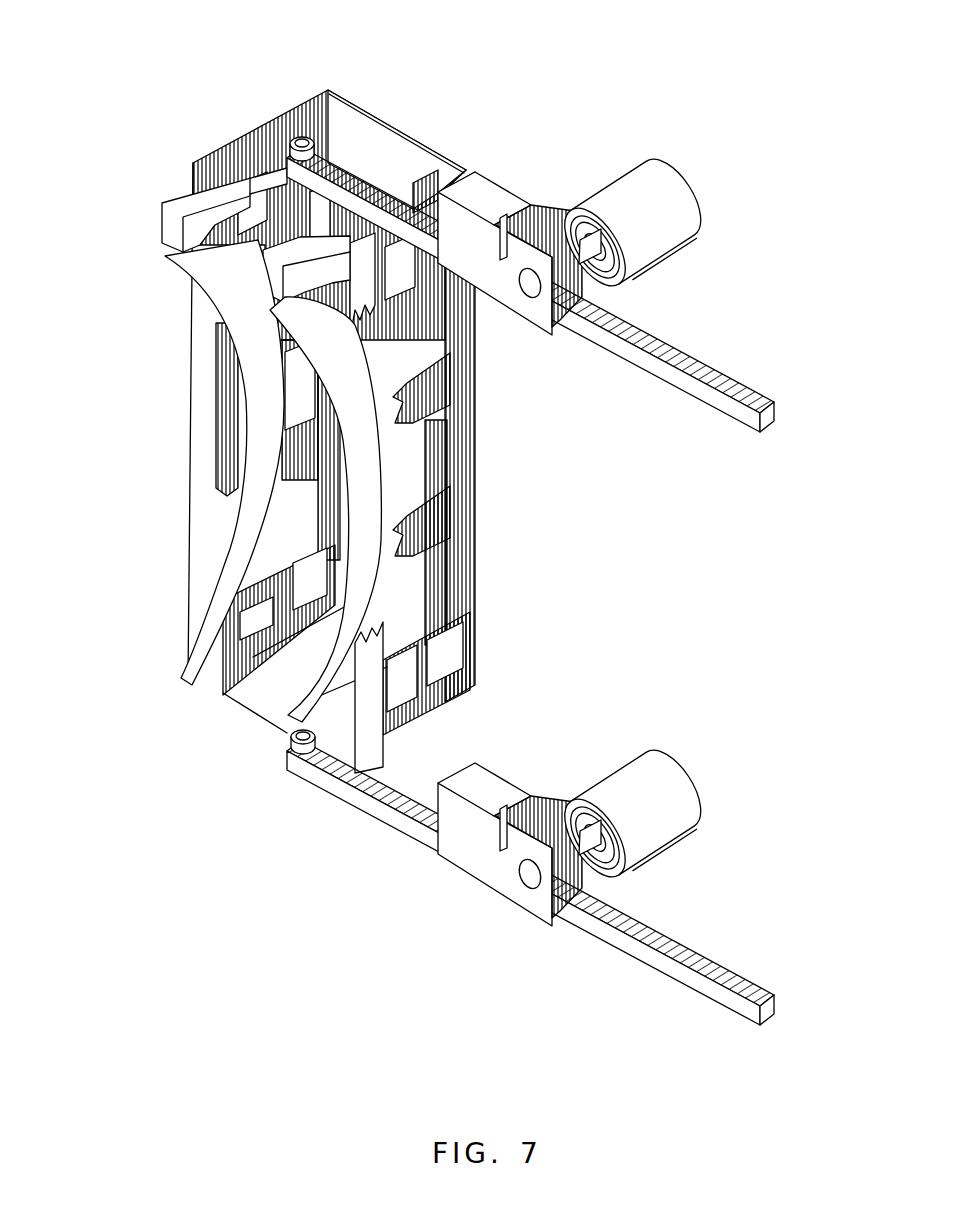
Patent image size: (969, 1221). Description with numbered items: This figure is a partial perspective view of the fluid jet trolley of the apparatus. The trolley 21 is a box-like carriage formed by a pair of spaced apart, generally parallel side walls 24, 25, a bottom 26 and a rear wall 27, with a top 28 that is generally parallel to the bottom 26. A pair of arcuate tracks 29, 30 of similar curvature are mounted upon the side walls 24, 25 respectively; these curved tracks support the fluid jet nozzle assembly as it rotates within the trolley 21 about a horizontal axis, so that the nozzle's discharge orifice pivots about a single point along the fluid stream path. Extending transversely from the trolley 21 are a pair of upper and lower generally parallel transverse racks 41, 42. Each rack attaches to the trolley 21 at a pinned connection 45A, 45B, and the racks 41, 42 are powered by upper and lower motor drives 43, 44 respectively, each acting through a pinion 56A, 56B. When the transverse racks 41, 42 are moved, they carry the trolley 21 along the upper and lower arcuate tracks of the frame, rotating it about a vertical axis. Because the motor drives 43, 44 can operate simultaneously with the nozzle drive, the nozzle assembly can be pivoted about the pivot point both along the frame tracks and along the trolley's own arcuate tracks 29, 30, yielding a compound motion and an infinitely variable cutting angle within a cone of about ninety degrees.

The trolley 21 is at (478, 568).
The side wall 24 is at (202, 337).
The side wall 25 is at (430, 517).
The bottom 26 is at (283, 657).
The rear wall 27 is at (432, 458).
The top 28 is at (400, 150).
The arcuate track 29 is at (205, 455).
The arcuate track 30 is at (235, 598).
The upper transverse rack 41 is at (703, 362).
The lower transverse rack 42 is at (700, 953).
The upper motor drive 43 is at (657, 180).
The lower motor drive 44 is at (677, 780).
The pinned connection 45A is at (297, 112).
The pinned connection 45B is at (290, 752).
The pinion 56A is at (543, 200).
The pinion 56B is at (548, 795).